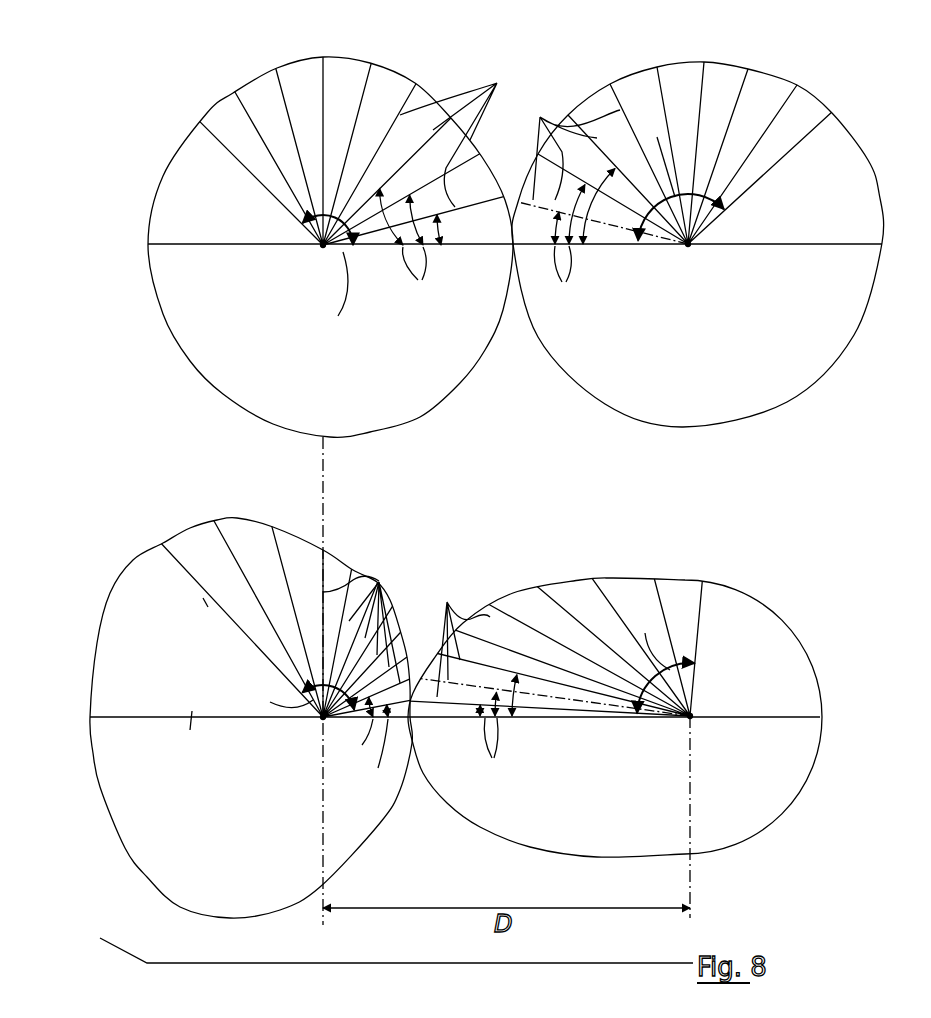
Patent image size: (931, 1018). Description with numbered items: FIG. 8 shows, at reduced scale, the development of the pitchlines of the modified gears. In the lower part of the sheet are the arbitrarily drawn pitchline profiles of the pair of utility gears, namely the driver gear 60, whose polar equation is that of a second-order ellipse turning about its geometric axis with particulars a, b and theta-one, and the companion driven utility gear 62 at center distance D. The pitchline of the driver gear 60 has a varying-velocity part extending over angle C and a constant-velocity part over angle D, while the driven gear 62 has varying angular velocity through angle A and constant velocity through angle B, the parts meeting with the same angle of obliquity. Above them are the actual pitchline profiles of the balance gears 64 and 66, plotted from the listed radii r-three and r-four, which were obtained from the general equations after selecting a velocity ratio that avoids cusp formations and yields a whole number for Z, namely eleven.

The driver gear 60 is at (125, 848).
The driven utility gear 62 is at (628, 578).
The balance gear 64 is at (253, 78).
The balance gear 66 is at (592, 97).